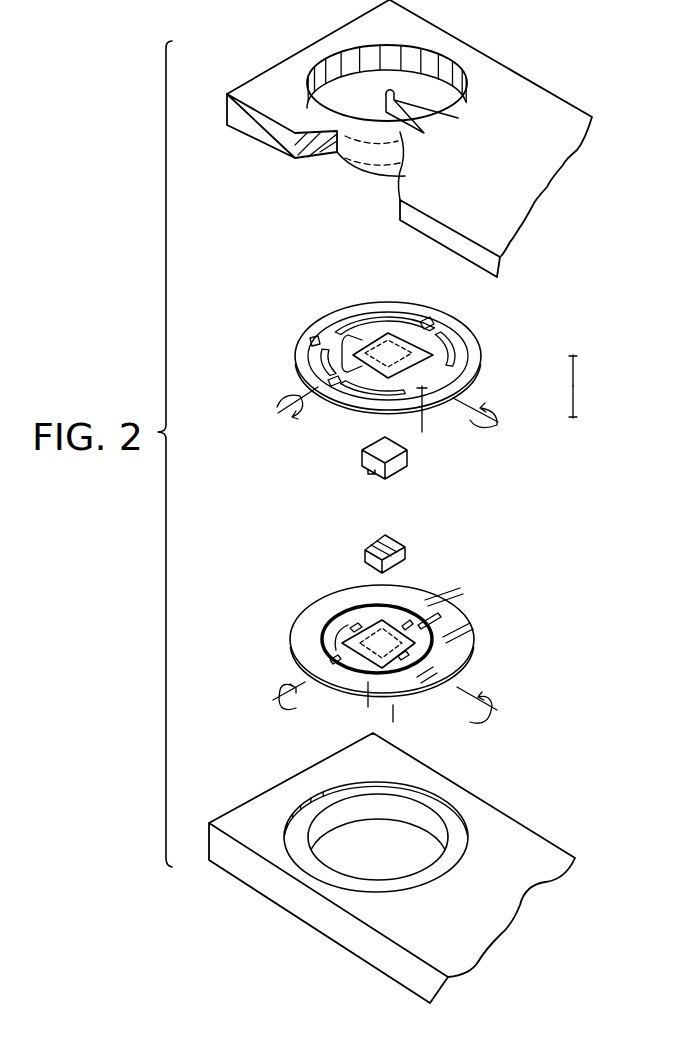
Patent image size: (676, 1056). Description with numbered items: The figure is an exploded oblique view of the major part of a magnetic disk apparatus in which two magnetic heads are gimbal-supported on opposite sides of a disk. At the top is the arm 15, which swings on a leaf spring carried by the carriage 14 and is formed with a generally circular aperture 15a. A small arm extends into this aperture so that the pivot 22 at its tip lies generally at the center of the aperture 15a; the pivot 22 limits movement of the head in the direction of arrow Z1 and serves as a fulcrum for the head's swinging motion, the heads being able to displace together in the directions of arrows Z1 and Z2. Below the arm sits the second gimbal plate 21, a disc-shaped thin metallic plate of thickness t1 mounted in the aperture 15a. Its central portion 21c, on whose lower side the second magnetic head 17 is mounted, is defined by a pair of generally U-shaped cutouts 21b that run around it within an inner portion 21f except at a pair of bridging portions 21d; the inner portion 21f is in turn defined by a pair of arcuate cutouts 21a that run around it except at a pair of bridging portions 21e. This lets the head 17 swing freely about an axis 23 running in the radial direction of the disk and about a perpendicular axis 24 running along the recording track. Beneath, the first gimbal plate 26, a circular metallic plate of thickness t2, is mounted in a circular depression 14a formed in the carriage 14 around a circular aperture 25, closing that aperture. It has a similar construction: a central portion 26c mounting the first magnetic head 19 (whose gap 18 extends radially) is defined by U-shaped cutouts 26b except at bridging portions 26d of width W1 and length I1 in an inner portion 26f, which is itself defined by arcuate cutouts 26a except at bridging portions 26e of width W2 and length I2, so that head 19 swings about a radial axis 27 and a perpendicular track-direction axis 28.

The carriage 14 is at (528, 840).
The circular depression 14a is at (448, 822).
The arm 15 is at (547, 90).
The aperture 15a is at (422, 87).
The second magnetic head 17 is at (397, 450).
The gap 18 is at (405, 553).
The first magnetic head 19 is at (405, 548).
The second gimbal plate 21 is at (477, 350).
The arcuate cutouts 21a is at (333, 322).
The U-shaped cutouts 21b is at (377, 332).
The central portion 21c is at (390, 345).
The bridging portions 21d is at (358, 337).
The bridging portions 21e is at (437, 325).
The inner portion 21f is at (335, 345).
The pivot 22 is at (385, 110).
The axis 23 is at (495, 422).
The axis 24 is at (283, 402).
The aperture 25 is at (357, 858).
The first gimbal plate 26 is at (463, 655).
The arcuate cutouts 26a is at (342, 615).
The U-shaped cutouts 26b is at (373, 615).
The central portion 26c is at (363, 655).
The bridging portions 26d is at (355, 627).
The bridging portions 26e is at (418, 615).
The inner portion 26f is at (332, 638).
The axis 27 is at (492, 705).
The axis 28 is at (292, 690).
The thickness t1 is at (430, 413).
The thickness t2 is at (358, 702).
The arrow Z1 is at (585, 370).
The arrow Z2 is at (585, 405).
The width W1 is at (435, 697).
The width W2 is at (461, 603).
The length I1 is at (401, 714).
The length I2 is at (470, 636).